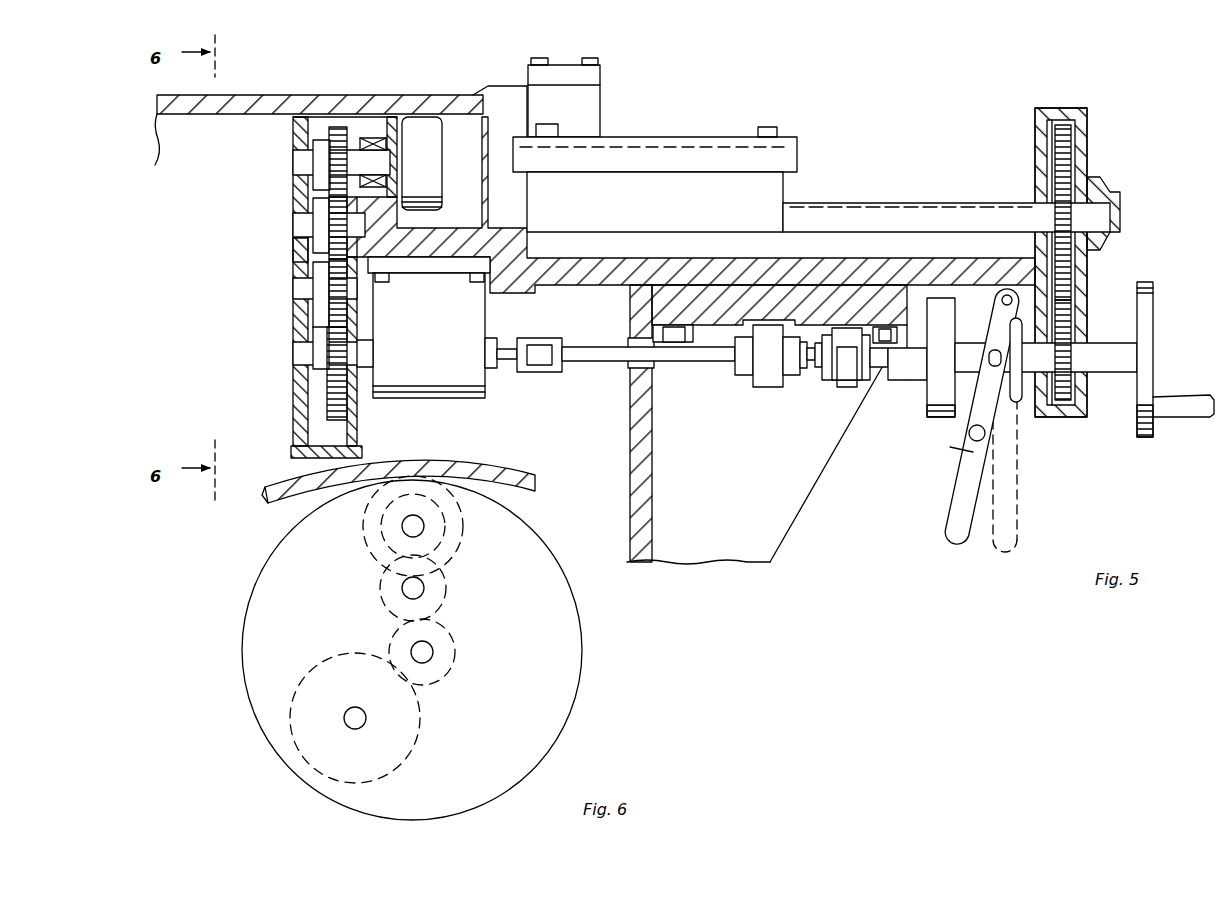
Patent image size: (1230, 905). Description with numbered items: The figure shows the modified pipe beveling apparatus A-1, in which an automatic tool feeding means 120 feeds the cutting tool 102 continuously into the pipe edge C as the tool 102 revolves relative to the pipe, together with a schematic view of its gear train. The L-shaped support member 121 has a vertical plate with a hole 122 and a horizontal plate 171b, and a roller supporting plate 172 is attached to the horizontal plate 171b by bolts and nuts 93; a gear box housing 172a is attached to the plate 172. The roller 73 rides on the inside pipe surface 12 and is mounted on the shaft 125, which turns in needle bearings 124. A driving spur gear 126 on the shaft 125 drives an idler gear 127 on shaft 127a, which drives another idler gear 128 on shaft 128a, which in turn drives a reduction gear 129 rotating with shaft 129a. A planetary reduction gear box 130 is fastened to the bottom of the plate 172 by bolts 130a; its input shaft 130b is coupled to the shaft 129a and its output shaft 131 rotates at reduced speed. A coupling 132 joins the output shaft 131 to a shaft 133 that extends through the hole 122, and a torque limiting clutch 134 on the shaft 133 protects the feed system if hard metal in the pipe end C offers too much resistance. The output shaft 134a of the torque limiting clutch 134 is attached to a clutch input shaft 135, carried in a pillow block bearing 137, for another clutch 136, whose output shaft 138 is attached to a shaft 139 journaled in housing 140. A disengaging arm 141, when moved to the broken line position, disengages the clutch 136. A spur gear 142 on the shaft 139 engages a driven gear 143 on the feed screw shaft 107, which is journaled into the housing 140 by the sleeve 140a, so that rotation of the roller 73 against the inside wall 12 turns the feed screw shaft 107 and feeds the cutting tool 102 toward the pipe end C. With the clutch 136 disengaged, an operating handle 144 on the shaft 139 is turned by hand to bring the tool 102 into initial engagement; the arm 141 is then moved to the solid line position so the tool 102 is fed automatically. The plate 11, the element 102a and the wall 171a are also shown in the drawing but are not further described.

In FIG. 5, the plate 11 is at (252, 93).
In FIG. 6, the plate 11 is at (280, 482).
In FIG. 5, the inside pipe surface 12 is at (220, 114).
In FIG. 6, the inside pipe surface 12 is at (280, 503).
In FIG. 5, the roller 73 is at (424, 118).
In FIG. 6, the roller 73 is at (423, 476).
In FIG. 5, the bolts and nuts 93 is at (655, 334).
In FIG. 5, the cutting tool 102 is at (502, 86).
In FIG. 5, the actuator body 102a is at (540, 60).
In FIG. 5, the feed screw shaft 107 is at (927, 203).
In FIG. 5, the automatic tool feeding means 120 is at (276, 336).
In FIG. 5, the L-shaped support member 121 is at (816, 484).
In FIG. 5, the hole 122 is at (628, 368).
In FIG. 5, the needle bearings 124 is at (368, 136).
In FIG. 5, the shaft 125 is at (298, 158).
In FIG. 5, the driving spur gear 126 is at (337, 125).
In FIG. 5, the idler gear 127 is at (305, 198).
In FIG. 6, the idler gear 127 is at (447, 592).
In FIG. 5, the shaft 127a is at (300, 222).
In FIG. 5, the idler gear 128 is at (318, 316).
In FIG. 6, the idler gear 128 is at (457, 652).
In FIG. 5, the shaft 128a is at (298, 288).
In FIG. 5, the reduction gear 129 is at (325, 402).
In FIG. 6, the reduction gear 129 is at (420, 742).
In FIG. 5, the shaft 129a is at (302, 357).
In FIG. 5, the planetary reduction gear box 130 is at (446, 338).
In FIG. 5, the bolts 130a is at (470, 284).
In FIG. 5, the input shaft 130b is at (376, 350).
In FIG. 5, the output shaft 131 is at (505, 348).
In FIG. 5, the coupling 132 is at (540, 374).
In FIG. 5, the shaft 133 is at (592, 362).
In FIG. 5, the torque limiting clutch 134 is at (760, 390).
In FIG. 5, the output shaft 134a is at (806, 370).
In FIG. 5, the clutch input shaft 135 is at (874, 382).
In FIG. 5, the clutch 136 is at (930, 420).
In FIG. 5, the pillow block bearing 137 is at (832, 384).
In FIG. 5, the output shaft 138 is at (1020, 398).
In FIG. 5, the shaft 139 is at (1104, 342).
In FIG. 5, the housing 140 is at (1090, 268).
In FIG. 5, the sleeve 140a is at (1120, 207).
In FIG. 5, the disengaging arm 141 is at (960, 530).
In FIG. 5, the spur gear 142 is at (1062, 405).
In FIG. 5, the driven gear 143 is at (1072, 152).
In FIG. 5, the operating handle 144 is at (1155, 362).
In FIG. 5, the frame wall 171a is at (637, 437).
In FIG. 5, the horizontal plate 171b is at (710, 318).
In FIG. 5, the roller supporting plate 172 is at (607, 268).
In FIG. 5, the gear box housing 172a is at (296, 250).
In FIG. 5, the modified pipe beveling apparatus A-1 is at (802, 138).
In FIG. 6, the pipe edge C is at (489, 478).